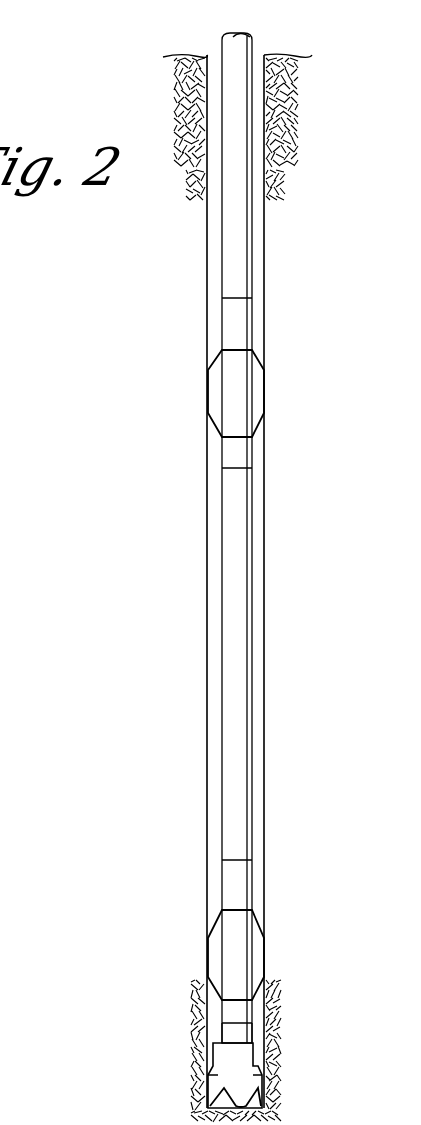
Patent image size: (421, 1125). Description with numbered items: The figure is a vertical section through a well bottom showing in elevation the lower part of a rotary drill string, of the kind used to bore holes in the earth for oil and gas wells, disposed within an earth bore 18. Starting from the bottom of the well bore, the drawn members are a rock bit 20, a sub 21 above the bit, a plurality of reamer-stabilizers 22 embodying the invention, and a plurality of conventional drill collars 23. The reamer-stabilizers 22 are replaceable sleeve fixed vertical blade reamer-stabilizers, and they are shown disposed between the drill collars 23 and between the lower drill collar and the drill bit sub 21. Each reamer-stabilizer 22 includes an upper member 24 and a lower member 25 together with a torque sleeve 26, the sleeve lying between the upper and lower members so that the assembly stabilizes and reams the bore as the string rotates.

The earth bore 18 is at (265, 555).
The rock bit 20 is at (228, 1077).
The sub 21 is at (232, 1033).
The reamer-stabilizer 22 is at (241, 672).
The drill collar 23 is at (238, 252).
The upper member 24 is at (235, 319).
The lower member 25 is at (240, 450).
The torque sleeve 26 is at (237, 372).